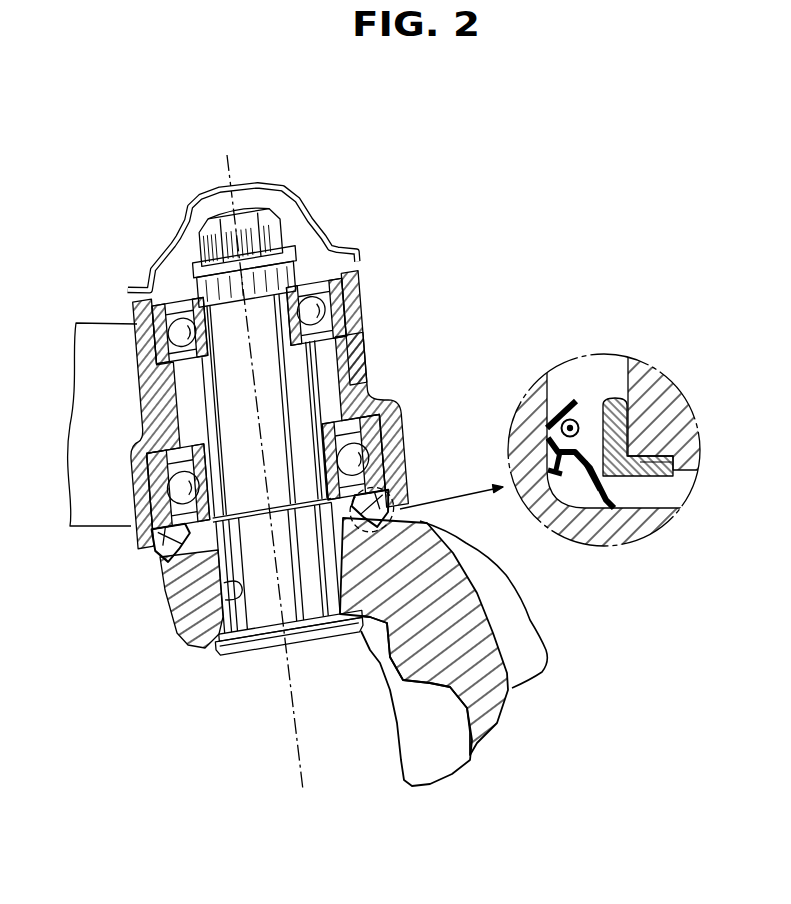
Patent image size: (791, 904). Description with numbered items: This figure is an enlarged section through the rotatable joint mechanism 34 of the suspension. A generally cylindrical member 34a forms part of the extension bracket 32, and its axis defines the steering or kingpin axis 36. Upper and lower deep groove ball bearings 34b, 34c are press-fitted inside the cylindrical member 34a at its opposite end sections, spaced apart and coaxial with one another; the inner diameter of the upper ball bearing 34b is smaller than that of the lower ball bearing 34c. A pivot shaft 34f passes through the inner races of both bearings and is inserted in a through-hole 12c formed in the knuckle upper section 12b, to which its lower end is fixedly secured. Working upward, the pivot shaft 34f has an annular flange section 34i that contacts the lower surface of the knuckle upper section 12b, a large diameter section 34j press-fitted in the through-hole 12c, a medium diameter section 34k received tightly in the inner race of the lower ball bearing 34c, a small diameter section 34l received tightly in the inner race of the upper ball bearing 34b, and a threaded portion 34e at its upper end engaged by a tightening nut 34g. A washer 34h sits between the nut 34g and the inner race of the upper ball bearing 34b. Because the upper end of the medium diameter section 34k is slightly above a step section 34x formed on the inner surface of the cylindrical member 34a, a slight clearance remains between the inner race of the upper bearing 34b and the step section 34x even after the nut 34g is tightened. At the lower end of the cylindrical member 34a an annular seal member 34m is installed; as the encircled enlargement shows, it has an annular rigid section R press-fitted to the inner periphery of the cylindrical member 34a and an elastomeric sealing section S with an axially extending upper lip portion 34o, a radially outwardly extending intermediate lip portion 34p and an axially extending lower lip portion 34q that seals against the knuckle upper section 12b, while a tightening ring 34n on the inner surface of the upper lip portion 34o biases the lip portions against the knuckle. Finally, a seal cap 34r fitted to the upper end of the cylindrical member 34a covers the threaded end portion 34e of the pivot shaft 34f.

The knuckle upper section 12b is at (520, 627).
The through-hole 12c is at (205, 630).
The extension bracket 32 is at (100, 330).
The rotatable joint mechanism 34 is at (368, 432).
The cylindrical member 34a is at (352, 334).
The upper deep groove ball bearing 34b is at (346, 301).
The lower deep groove ball bearing 34c is at (394, 449).
The threaded portion 34e is at (257, 208).
The pivot shaft 34f is at (232, 574).
The tightening nut 34g is at (272, 237).
The washer 34h is at (296, 270).
The annular flange section 34i is at (238, 655).
The large diameter section 34j is at (311, 604).
The medium diameter section 34k is at (213, 412).
The small diameter section 34l is at (334, 318).
The annular seal member 34m is at (160, 556).
The tightening ring 34n is at (584, 420).
The upper lip portion 34o is at (556, 410).
The intermediate lip portion 34p is at (557, 495).
The lower lip portion 34q is at (595, 497).
The seal cap 34r is at (175, 236).
The step section 34x is at (362, 350).
The steering axis 36 is at (293, 718).
The elastomeric sealing section S is at (582, 430).
The rigid section R is at (645, 462).